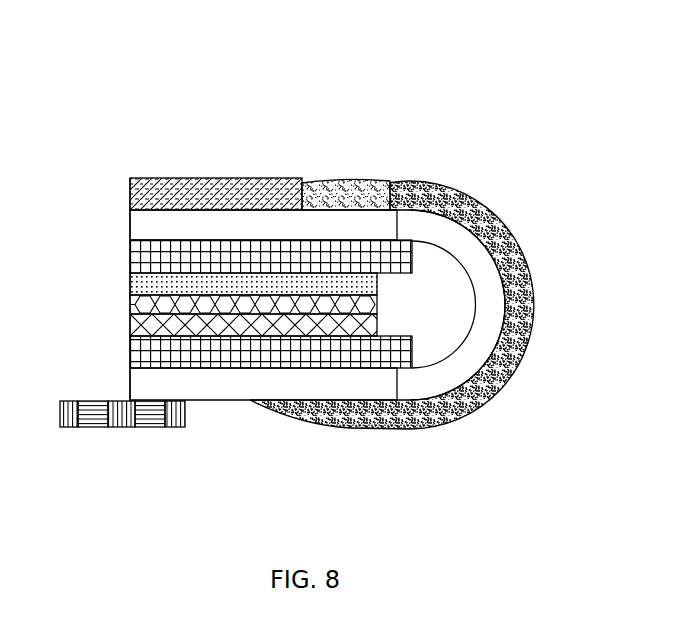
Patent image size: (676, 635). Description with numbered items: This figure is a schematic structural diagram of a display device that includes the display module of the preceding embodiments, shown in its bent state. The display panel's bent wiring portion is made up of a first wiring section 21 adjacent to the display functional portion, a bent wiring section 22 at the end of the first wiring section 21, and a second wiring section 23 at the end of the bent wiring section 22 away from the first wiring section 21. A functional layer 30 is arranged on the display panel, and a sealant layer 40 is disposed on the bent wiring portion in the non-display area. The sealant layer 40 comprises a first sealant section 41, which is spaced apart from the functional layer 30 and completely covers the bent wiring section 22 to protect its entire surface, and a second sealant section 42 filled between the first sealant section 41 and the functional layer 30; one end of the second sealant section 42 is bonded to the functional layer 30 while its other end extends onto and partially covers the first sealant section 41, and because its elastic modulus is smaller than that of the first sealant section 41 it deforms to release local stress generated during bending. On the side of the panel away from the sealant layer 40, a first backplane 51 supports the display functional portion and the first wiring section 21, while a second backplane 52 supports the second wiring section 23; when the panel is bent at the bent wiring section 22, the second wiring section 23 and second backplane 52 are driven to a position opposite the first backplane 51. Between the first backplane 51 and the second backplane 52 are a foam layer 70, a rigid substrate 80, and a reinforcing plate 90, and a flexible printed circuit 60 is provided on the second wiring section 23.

The first wiring section 21 is at (130, 225).
The bent wiring section 22 is at (515, 318).
The second wiring section 23 is at (215, 401).
The functional layer 30 is at (148, 178).
The sealant layer 40 is at (392, 219).
The first sealant section 41 is at (345, 82).
The second sealant section 42 is at (337, 182).
The first backplane 51 is at (130, 257).
The second backplane 52 is at (130, 351).
The flexible printed circuit 60 is at (103, 427).
The foam layer 70 is at (130, 288).
The rigid substrate 80 is at (130, 305).
The reinforcing plate 90 is at (130, 325).